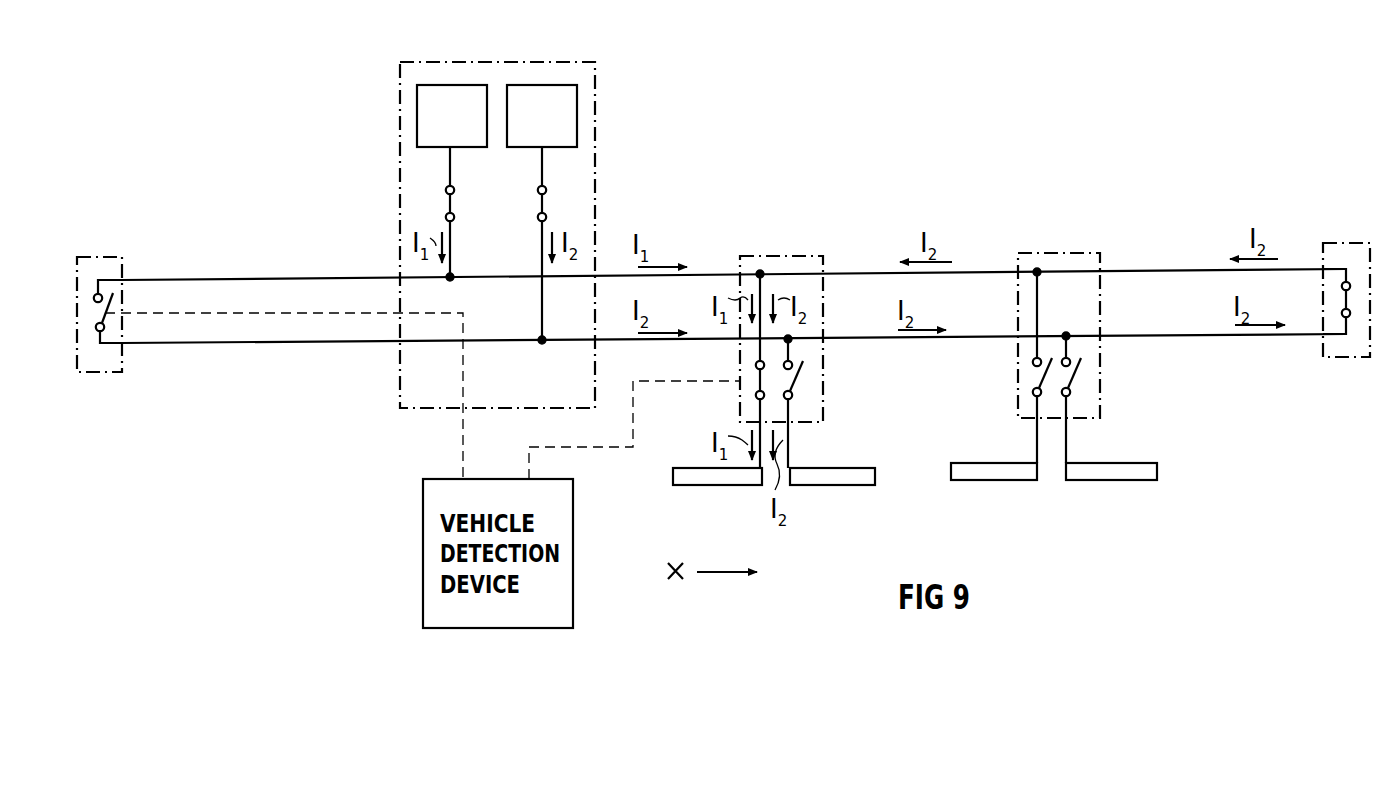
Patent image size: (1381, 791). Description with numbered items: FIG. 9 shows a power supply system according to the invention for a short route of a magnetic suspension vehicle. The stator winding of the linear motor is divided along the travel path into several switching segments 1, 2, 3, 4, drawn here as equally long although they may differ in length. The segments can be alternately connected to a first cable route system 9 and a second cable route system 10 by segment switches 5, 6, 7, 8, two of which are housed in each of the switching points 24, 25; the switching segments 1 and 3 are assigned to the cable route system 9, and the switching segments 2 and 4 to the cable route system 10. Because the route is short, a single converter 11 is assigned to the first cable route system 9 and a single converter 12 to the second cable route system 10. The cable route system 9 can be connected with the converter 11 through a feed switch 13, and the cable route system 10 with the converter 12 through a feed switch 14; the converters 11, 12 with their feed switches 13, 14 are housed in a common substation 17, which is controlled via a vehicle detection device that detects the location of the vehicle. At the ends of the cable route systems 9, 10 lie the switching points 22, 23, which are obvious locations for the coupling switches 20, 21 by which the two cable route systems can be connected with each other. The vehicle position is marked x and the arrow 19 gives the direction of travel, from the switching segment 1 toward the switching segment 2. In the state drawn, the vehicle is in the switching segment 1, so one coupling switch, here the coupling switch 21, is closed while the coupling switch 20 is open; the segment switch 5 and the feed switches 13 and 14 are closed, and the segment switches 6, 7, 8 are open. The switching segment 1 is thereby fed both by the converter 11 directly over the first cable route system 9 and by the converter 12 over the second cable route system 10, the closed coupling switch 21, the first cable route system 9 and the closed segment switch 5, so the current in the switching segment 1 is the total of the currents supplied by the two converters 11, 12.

The switching segment 1 is at (714, 486).
The switching segment 2 is at (821, 480).
The switching segment 3 is at (985, 481).
The switching segment 4 is at (1103, 481).
The segment switch 5 is at (754, 374).
The segment switch 6 is at (808, 376).
The segment switch 7 is at (1034, 376).
The segment switch 8 is at (1078, 376).
The first cable route system 9 is at (1147, 268).
The second cable route system 10 is at (1150, 337).
The converter 11 is at (415, 123).
The converter 12 is at (578, 109).
The feed switch 13 is at (446, 203).
The feed switch 14 is at (570, 202).
The substation 17 is at (475, 61).
The arrow 19 is at (702, 576).
The coupling switch 20 is at (128, 292).
The coupling switch 21 is at (1341, 301).
The switching point 22 is at (92, 256).
The switching point 23 is at (1357, 242).
The switching point 24 is at (800, 255).
The switching point 25 is at (1075, 252).